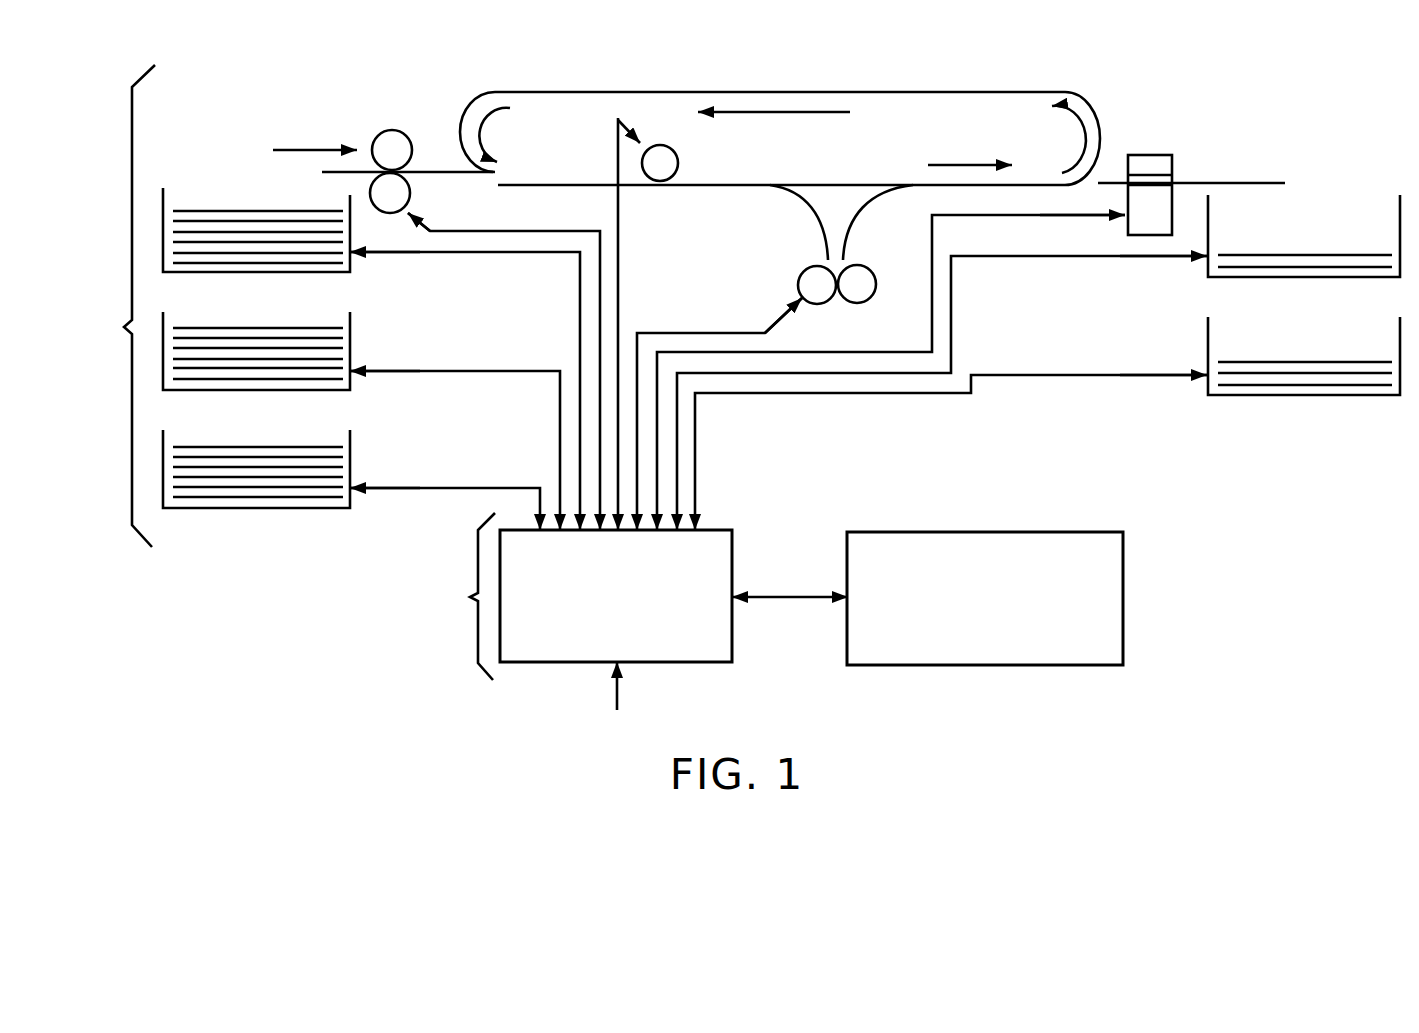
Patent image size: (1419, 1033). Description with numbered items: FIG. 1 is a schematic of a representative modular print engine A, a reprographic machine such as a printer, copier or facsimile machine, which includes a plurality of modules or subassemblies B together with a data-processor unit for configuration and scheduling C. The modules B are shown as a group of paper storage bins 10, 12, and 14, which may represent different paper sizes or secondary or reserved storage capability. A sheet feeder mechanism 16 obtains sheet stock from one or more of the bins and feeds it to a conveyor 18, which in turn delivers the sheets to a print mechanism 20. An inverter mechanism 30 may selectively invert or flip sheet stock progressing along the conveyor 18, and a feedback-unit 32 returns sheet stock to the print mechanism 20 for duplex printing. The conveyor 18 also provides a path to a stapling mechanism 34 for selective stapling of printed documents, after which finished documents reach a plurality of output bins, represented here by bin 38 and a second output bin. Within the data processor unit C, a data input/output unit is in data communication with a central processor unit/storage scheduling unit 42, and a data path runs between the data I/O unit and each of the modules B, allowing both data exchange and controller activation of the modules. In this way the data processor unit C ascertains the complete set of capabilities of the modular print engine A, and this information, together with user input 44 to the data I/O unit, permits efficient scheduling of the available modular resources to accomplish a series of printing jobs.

The modular print engine A is at (317, 70).
The modules or subassemblies B is at (126, 306).
The data-processor unit for configuration and scheduling C is at (471, 596).
The paper storage bin 10 is at (352, 262).
The paper storage bin 12 is at (352, 382).
The paper storage bin 14 is at (352, 500).
The sheet feeder mechanism 16 is at (395, 130).
The conveyor 18 is at (568, 187).
The print mechanism 20 is at (680, 155).
The inverter mechanism 30 is at (850, 177).
The feedback-unit 32 is at (933, 92).
The stapling mechanism 34 is at (1172, 155).
The output bin 38 is at (1228, 278).
The central processor unit/storage scheduling unit 42 is at (1027, 667).
The user input 44 is at (617, 701).